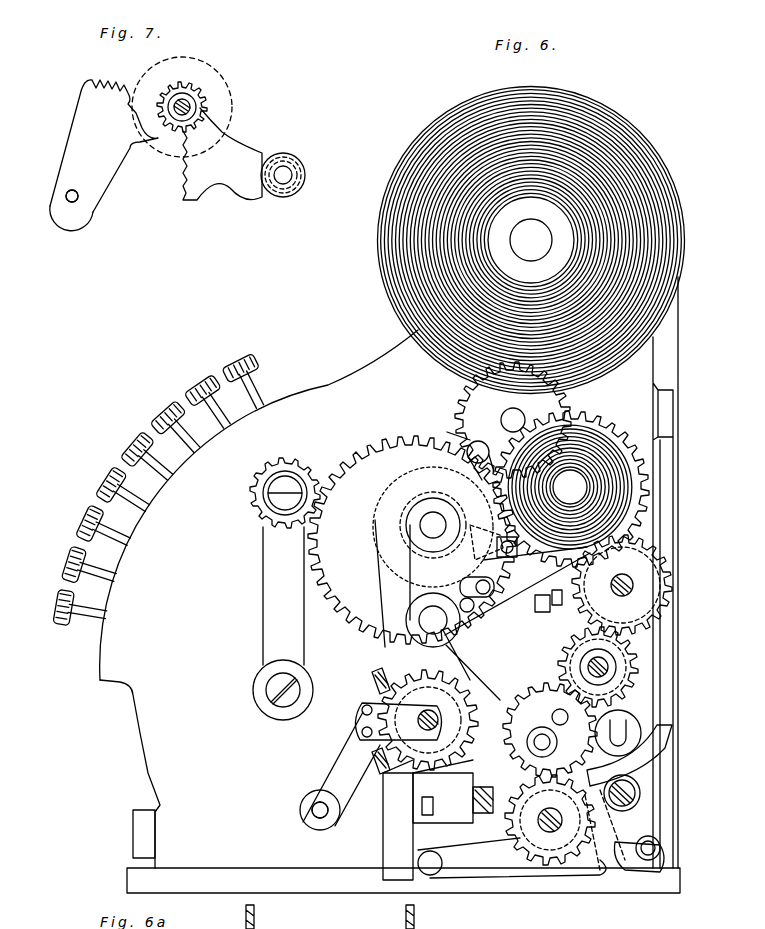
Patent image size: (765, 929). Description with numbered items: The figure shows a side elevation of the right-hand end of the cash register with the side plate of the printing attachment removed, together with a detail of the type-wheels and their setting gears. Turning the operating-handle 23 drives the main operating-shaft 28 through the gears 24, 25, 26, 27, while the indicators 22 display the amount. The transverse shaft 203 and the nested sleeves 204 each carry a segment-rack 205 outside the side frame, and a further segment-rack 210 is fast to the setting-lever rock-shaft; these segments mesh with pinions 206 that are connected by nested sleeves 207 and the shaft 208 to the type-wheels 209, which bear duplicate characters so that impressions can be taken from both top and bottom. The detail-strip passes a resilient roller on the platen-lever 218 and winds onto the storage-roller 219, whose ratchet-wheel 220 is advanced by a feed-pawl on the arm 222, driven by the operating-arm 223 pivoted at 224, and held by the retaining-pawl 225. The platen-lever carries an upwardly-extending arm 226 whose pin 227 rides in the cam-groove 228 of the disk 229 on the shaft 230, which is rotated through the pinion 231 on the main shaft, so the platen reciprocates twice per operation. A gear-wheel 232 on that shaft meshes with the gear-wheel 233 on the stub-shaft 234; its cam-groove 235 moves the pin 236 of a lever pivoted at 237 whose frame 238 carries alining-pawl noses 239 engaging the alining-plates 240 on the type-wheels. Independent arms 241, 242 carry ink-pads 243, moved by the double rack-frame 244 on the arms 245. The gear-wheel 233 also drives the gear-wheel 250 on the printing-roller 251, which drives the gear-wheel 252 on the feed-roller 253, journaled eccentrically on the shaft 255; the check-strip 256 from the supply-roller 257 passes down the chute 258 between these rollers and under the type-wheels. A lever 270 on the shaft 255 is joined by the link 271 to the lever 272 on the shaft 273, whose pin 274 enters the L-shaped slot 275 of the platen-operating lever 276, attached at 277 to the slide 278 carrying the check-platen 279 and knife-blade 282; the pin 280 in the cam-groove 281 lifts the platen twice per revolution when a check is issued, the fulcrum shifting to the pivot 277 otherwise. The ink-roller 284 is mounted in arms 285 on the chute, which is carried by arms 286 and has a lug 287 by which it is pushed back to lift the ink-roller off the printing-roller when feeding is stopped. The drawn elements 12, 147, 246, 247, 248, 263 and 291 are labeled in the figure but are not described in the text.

In FIG. 6, the support 12 is at (382, 914).
In FIG. 6, the indicators 22 is at (295, 470).
In FIG. 6, the operating-handle 23 is at (283, 623).
In FIG. 6, the gear 24 is at (233, 362).
In FIG. 6, the gear-wheel 25 is at (447, 432).
In FIG. 6, the gear 26 is at (466, 401).
In FIG. 6, the gear 27 is at (603, 470).
In FIG. 6, the main operating-shaft 28 is at (590, 545).
In FIG. 7, the pivot pin 147 is at (78, 200).
In FIG. 6, the pivot pin 147 is at (312, 810).
In FIG. 7, the transverse shaft 203 is at (292, 175).
In FIG. 7, the nested sleeves 204 is at (283, 162).
In FIG. 7, the segment-rack 205 is at (222, 154).
In FIG. 7, the pinion 206 is at (196, 100).
In FIG. 7, the nested sleeves 207 is at (198, 104).
In FIG. 7, the shaft 208 is at (196, 107).
In FIG. 6, the shaft 208 is at (442, 705).
In FIG. 7, the type-wheels 209 is at (190, 72).
In FIG. 6, the type-wheels 209 is at (420, 760).
In FIG. 7, the segment-rack 210 is at (104, 155).
In FIG. 6, the segment-rack 210 is at (312, 783).
In FIG. 6, the platen-lever 218 is at (458, 465).
In FIG. 6, the storage-roller 219 is at (428, 512).
In FIG. 6, the ratchet-wheel 220 is at (395, 488).
In FIG. 6, the arm 222 is at (468, 522).
In FIG. 6, the operating-arm 223 is at (523, 555).
In FIG. 6, the pivot 224 is at (468, 447).
In FIG. 6, the retaining-pawl 225 is at (466, 585).
In FIG. 6, the upwardly-extending arm 226 is at (655, 612).
In FIG. 6, the pin 227 is at (655, 597).
In FIG. 6, the cam-groove 228 is at (655, 567).
In FIG. 6, the disk 229 is at (655, 553).
In FIG. 6, the shaft 230 is at (655, 583).
In FIG. 6, the pinion 231 is at (600, 520).
In FIG. 6, the gear-wheel 232 is at (650, 545).
In FIG. 6, the gear-wheel 233 is at (640, 676).
In FIG. 6, the stub-shaft 234 is at (612, 668).
In FIG. 6, the cam-groove 235 is at (640, 655).
In FIG. 6, the pin 236 is at (645, 640).
In FIG. 6, the pivot 237 is at (496, 656).
In FIG. 6, the frame 238 is at (494, 738).
In FIG. 6, the alining-pawl noses 239 is at (428, 782).
In FIG. 6, the alining-plates 240 is at (428, 720).
In FIG. 6, the arm 241 is at (372, 673).
In FIG. 6, the arm 242 is at (358, 730).
In FIG. 6, the ink-pads 243 is at (374, 690).
In FIG. 6, the double rack-frame 244 is at (400, 655).
In FIG. 6, the arms 245 is at (377, 575).
In FIG. 6, the spiral spring 246 is at (578, 440).
In FIG. 6, the roller 247 is at (405, 620).
In FIG. 6, the arm 248 is at (502, 636).
In FIG. 6, the gear-wheel 250 is at (435, 840).
In FIG. 6, the printing-roller 251 is at (498, 790).
In FIG. 6, the gear-wheel 252 is at (590, 850).
In FIG. 6, the feed-roller 253 is at (575, 845).
In FIG. 6, the shaft 255 is at (520, 868).
In FIG. 6, the check-strip 256 is at (679, 392).
In FIG. 6, the supply-roller 257 is at (531, 240).
In FIG. 6, the chute 258 is at (670, 735).
In FIG. 6, the lever 263 is at (460, 880).
In FIG. 6, the lever 270 is at (512, 858).
In FIG. 6, the link 271 is at (650, 828).
In FIG. 6, the lever 272 is at (645, 815).
In FIG. 6, the shaft 273 is at (640, 805).
In FIG. 6, the pin 274 is at (655, 845).
In FIG. 6, the L-shaped slot 275 is at (660, 862).
In FIG. 6, the platen-operating lever 276 is at (612, 866).
In FIG. 6, the pivot 277 is at (418, 862).
In FIG. 6, the slide 278 is at (448, 836).
In FIG. 6, the check-platen 279 is at (420, 815).
In FIG. 6, the pin 280 is at (543, 872).
In FIG. 6, the cam-groove 281 is at (560, 840).
In FIG. 6, the knife-blade 282 is at (428, 826).
In FIG. 6, the ink-roller 284 is at (600, 705).
In FIG. 6, the arms 285 is at (642, 733).
In FIG. 6, the arms 286 is at (640, 790).
In FIG. 6, the lug 287 is at (630, 770).
In FIG. 6, the pin 291 is at (348, 925).